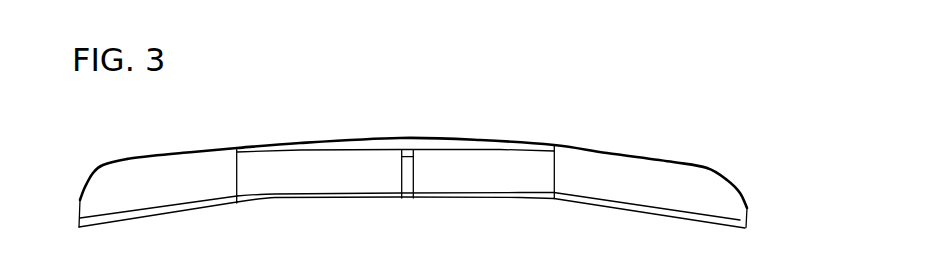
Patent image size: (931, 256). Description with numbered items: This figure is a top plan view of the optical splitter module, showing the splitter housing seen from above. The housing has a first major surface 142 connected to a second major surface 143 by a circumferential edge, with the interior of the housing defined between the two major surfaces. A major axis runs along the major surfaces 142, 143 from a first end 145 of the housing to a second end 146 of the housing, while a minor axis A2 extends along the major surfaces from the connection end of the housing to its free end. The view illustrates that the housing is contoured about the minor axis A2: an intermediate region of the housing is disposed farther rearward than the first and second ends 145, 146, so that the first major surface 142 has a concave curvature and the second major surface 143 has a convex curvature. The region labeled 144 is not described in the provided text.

The first major surface 142 is at (450, 198).
The second major surface 143 is at (412, 140).
The side portion 144 is at (612, 178).
The first end 145 is at (80, 201).
The second end 146 is at (750, 199).
The minor axis A2 is at (411, 175).